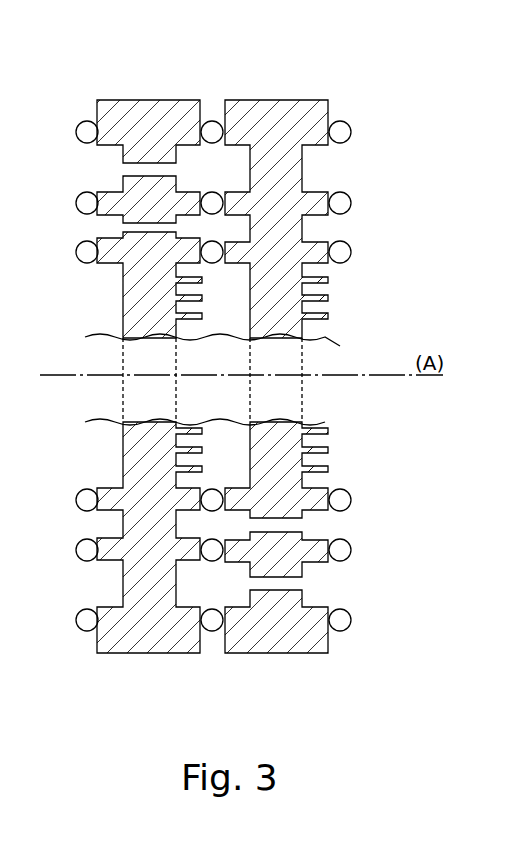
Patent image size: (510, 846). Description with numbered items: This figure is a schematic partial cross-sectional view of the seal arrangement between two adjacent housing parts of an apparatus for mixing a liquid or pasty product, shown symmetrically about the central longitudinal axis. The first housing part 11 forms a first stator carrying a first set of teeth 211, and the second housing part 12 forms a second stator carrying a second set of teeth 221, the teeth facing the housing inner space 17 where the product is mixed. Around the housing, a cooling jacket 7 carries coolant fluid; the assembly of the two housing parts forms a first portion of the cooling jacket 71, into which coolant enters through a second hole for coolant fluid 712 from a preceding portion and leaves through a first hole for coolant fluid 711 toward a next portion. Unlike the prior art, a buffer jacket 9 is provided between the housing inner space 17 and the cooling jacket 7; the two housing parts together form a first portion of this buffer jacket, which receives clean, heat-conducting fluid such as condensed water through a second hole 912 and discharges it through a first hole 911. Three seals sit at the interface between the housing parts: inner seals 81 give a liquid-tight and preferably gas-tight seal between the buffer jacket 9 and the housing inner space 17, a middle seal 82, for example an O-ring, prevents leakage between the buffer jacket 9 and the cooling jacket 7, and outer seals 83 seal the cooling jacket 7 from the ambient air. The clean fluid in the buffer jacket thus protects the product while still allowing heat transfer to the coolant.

The first housing part 11 is at (148, 100).
The second housing part 12 is at (276, 100).
The first portion of the cooling jacket 71 is at (126, 252).
The first hole for coolant fluid 711 is at (121, 175).
The first hole 911 is at (121, 226).
The first set of teeth 211 is at (204, 272).
The second set of teeth 221 is at (338, 272).
The inner seals 81 is at (351, 252).
The middle seal 82 is at (351, 205).
The outer seals 83 is at (340, 121).
The housing inner space 17 is at (242, 408).
The buffer jacket 9 is at (180, 525).
The cooling jacket 7 is at (233, 597).
The second hole for coolant fluid 712 is at (300, 526).
The second hole 912 is at (297, 587).